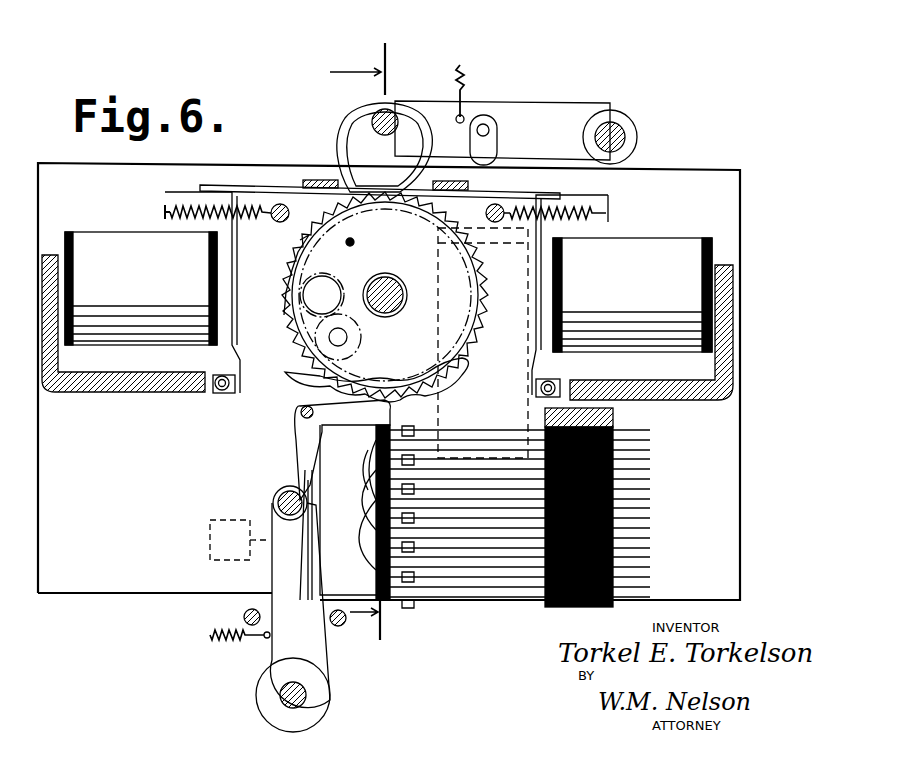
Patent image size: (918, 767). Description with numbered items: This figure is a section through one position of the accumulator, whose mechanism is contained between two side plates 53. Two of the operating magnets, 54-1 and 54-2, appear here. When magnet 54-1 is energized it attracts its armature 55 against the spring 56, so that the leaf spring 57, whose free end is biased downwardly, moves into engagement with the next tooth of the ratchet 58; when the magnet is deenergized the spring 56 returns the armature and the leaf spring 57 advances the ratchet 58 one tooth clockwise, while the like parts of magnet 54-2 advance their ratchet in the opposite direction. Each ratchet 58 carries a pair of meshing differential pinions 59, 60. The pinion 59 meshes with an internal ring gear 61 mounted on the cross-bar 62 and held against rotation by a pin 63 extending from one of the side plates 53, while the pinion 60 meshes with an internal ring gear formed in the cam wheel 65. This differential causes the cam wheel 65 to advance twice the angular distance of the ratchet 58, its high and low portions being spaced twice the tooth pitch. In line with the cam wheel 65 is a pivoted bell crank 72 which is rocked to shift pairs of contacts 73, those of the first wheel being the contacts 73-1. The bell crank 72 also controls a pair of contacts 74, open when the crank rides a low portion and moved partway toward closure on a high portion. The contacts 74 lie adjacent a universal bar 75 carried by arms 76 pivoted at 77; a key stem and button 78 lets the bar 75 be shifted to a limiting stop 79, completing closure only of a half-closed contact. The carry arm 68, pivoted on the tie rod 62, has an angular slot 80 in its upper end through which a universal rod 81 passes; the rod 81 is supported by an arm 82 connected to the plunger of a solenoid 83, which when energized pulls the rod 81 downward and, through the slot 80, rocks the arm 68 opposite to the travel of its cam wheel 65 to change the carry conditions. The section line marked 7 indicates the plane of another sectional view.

The section line 7 is at (366, 341).
The side plates 53 is at (712, 163).
The operating magnet 54-1 is at (100, 242).
The operating magnet 54-2 is at (688, 232).
The armature 55 is at (250, 312).
The spring 56 is at (190, 222).
The leaf spring 57 is at (290, 186).
The ratchet 58 is at (300, 241).
The differential pinion 59 is at (355, 344).
The differential pinion 60 is at (338, 272).
The internal ring gear 61 is at (462, 300).
The cross-bar 62 is at (405, 293).
The pin 63 is at (353, 240).
The cam wheel 65 is at (452, 372).
The arm 68 is at (345, 130).
The bell crank 72 is at (300, 428).
The contacts 73 is at (456, 507).
The contacts 73-1 is at (376, 458).
The pair of contacts 74 is at (276, 508).
The universal bar 75 is at (282, 490).
The arms 76 is at (262, 652).
The pivot 77 is at (282, 696).
The key stem and button 78 is at (210, 556).
The limiting stop 79 is at (346, 622).
The angular slot 80 is at (408, 140).
The universal rod 81 is at (395, 112).
The arm 82 is at (566, 92).
The solenoid 83 is at (438, 258).